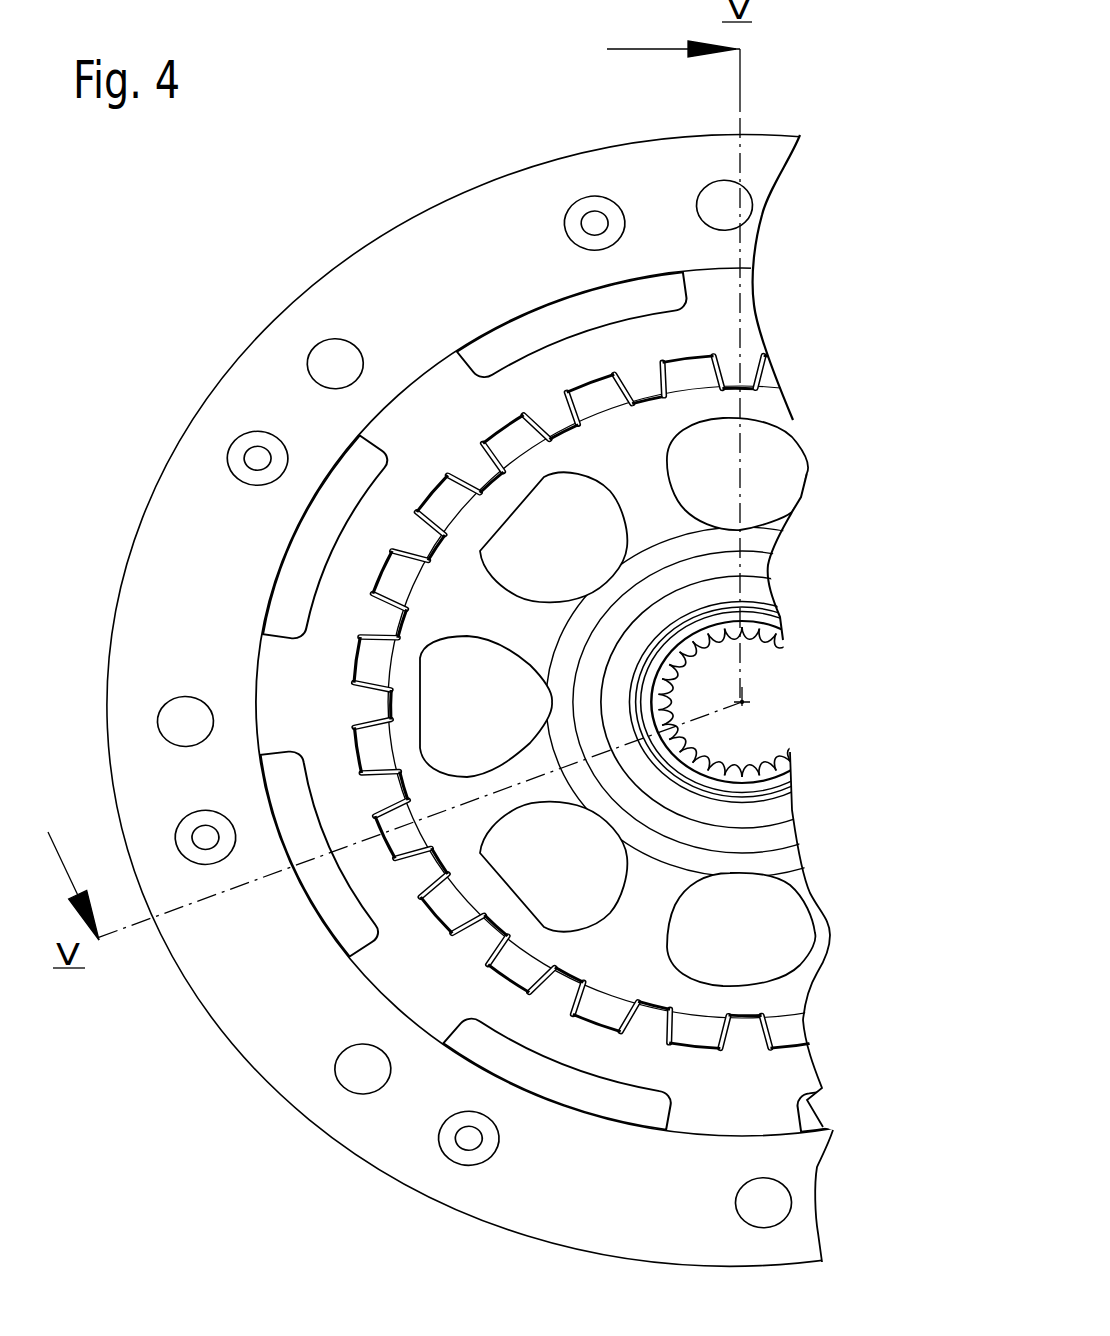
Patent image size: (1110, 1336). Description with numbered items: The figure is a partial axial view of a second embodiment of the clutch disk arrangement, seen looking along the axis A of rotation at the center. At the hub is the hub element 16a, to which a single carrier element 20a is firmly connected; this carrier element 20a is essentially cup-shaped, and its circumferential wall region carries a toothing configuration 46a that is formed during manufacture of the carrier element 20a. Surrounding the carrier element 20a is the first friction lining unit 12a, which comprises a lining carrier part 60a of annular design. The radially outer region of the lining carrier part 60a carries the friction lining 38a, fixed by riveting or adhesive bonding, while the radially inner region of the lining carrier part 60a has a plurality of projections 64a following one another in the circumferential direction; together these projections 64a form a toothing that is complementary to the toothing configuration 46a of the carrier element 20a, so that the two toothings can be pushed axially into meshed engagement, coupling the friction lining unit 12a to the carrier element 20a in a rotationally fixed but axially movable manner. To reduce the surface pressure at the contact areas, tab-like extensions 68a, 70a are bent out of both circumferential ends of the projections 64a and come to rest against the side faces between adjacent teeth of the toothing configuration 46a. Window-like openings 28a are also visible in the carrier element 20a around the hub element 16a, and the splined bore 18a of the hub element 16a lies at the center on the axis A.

The friction lining 38a is at (493, 212).
The lining carrier part 60a is at (438, 388).
The tab-like extension 68a is at (694, 355).
The projection 64a is at (752, 384).
The toothing configuration 46a is at (745, 378).
The tab-like extension 70a is at (796, 420).
The first friction lining unit 12a is at (750, 247).
The window openings 28a is at (757, 508).
The carrier element 20a is at (755, 562).
The hub element 16a is at (780, 638).
The internal spline 18a is at (690, 656).
The axis of rotation A is at (742, 702).